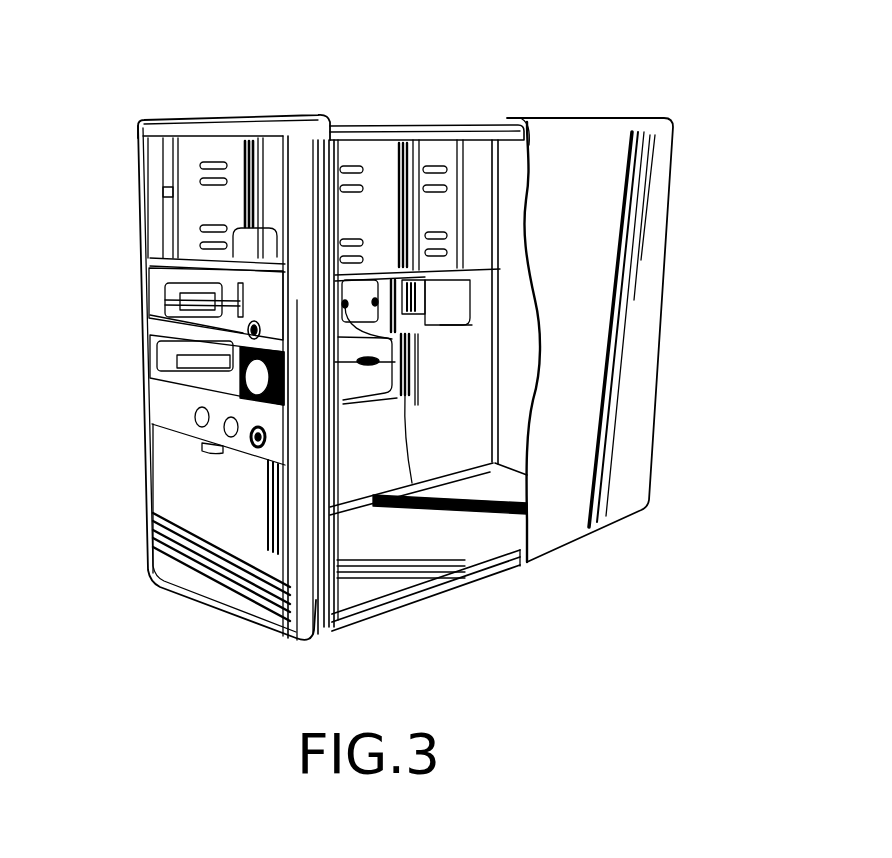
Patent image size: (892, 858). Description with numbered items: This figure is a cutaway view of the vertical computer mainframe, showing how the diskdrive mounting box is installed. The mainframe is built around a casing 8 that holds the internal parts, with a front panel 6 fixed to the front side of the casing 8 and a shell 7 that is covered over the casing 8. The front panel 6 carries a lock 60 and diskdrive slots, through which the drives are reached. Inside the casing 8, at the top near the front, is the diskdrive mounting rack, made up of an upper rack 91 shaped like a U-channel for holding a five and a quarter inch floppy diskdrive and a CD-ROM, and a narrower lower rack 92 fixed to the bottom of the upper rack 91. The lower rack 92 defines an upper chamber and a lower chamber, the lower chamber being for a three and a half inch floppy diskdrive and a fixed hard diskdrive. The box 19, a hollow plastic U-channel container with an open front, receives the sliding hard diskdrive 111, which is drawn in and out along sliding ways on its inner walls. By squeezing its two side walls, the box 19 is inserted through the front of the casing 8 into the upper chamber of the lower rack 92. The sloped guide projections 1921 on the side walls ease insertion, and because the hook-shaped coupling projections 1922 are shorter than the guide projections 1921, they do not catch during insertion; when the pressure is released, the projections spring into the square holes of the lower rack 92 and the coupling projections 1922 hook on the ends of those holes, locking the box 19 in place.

The front panel 6 is at (263, 613).
The shell 7 is at (643, 125).
The casing 8 is at (430, 580).
The box 19 is at (452, 297).
The lock 60 is at (250, 338).
The upper rack 91 is at (383, 160).
The lower rack 92 is at (357, 392).
The sliding hard diskdrive 111 is at (143, 287).
The guide projections 1921 is at (413, 329).
The hook-shaped coupling projections 1922 is at (415, 340).